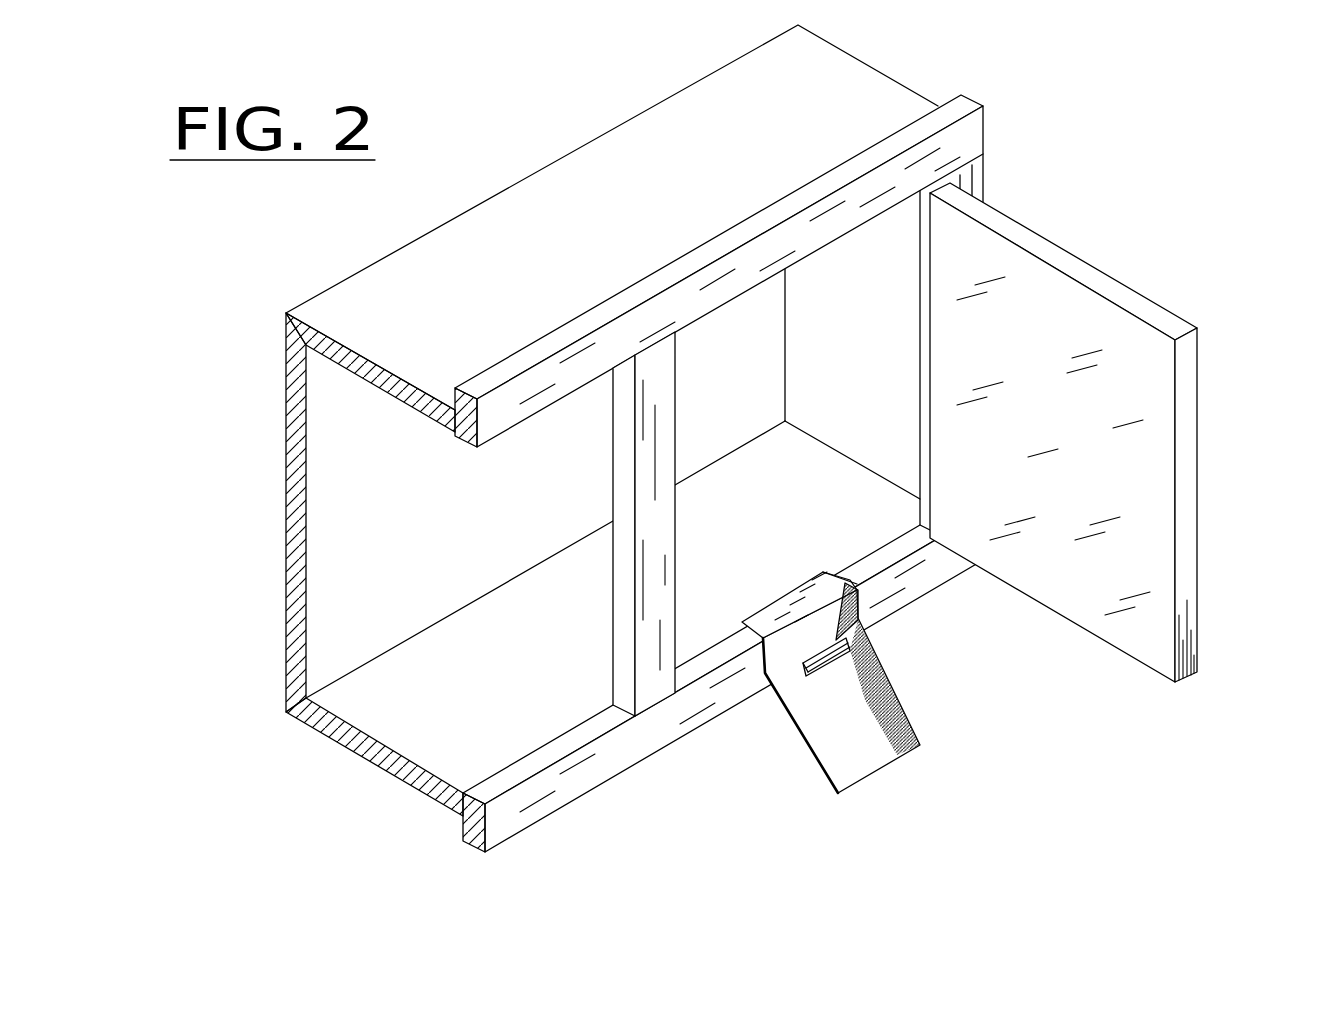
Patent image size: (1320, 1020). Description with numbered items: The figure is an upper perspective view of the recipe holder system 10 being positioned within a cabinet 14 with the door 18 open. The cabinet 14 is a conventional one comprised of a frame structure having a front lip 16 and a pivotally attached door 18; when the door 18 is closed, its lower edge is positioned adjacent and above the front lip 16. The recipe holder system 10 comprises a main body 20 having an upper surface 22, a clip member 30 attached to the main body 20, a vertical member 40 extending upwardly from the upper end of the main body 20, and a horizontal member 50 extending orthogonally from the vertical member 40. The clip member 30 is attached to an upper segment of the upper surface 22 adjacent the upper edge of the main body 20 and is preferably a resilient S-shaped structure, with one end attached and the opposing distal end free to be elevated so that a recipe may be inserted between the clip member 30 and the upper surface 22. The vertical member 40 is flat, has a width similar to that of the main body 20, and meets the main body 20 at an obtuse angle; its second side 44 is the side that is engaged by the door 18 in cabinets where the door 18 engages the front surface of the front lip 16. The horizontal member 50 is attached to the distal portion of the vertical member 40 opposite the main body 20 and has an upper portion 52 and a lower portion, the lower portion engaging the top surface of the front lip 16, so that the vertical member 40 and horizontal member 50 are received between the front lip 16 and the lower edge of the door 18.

The recipe holder system 10 is at (1115, 749).
The cabinet 14 is at (992, 139).
The front lip 16 is at (723, 653).
The door 18 is at (1128, 360).
The main body 20 is at (863, 677).
The upper surface 22 is at (905, 750).
The clip member 30 is at (828, 680).
The vertical member 40 is at (764, 677).
The second side 44 is at (857, 618).
The horizontal member 50 is at (857, 584).
The upper portion 52 is at (800, 595).